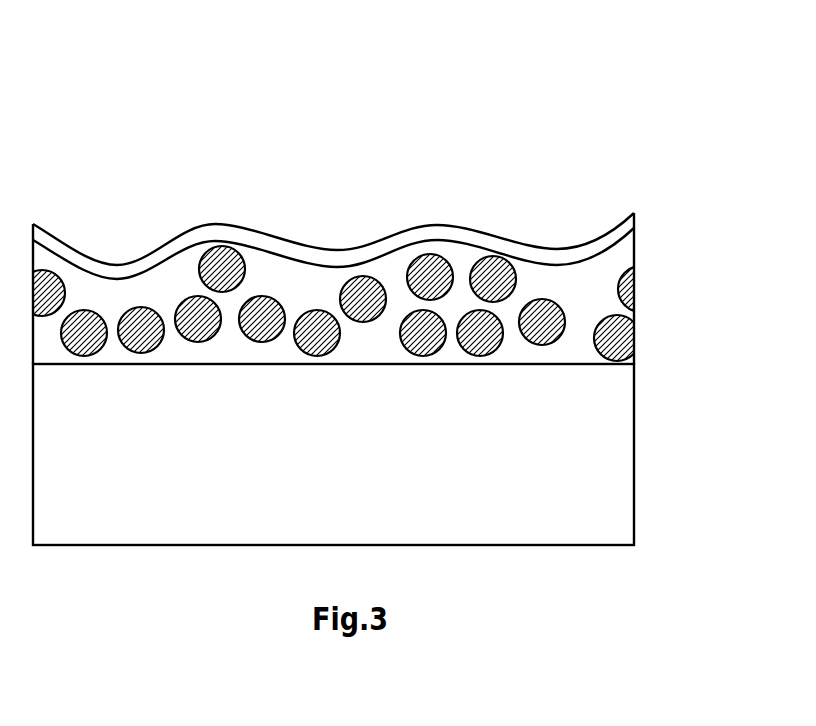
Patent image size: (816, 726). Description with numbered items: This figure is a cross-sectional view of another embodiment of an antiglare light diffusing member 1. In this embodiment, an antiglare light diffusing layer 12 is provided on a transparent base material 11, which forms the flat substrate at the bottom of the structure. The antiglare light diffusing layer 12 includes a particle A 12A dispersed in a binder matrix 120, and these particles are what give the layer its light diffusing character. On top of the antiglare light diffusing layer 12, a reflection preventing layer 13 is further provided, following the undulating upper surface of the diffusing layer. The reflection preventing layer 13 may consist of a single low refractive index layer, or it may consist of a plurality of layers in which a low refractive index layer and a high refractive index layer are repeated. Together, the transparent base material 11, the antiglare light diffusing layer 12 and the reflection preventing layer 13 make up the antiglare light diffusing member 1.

The antiglare light diffusing member 1 is at (592, 130).
The transparent base material 11 is at (592, 438).
The antiglare light diffusing layer 12 is at (652, 234).
The particle A 12A is at (222, 267).
The binder matrix 120 is at (530, 278).
The reflection preventing layer 13 is at (636, 222).